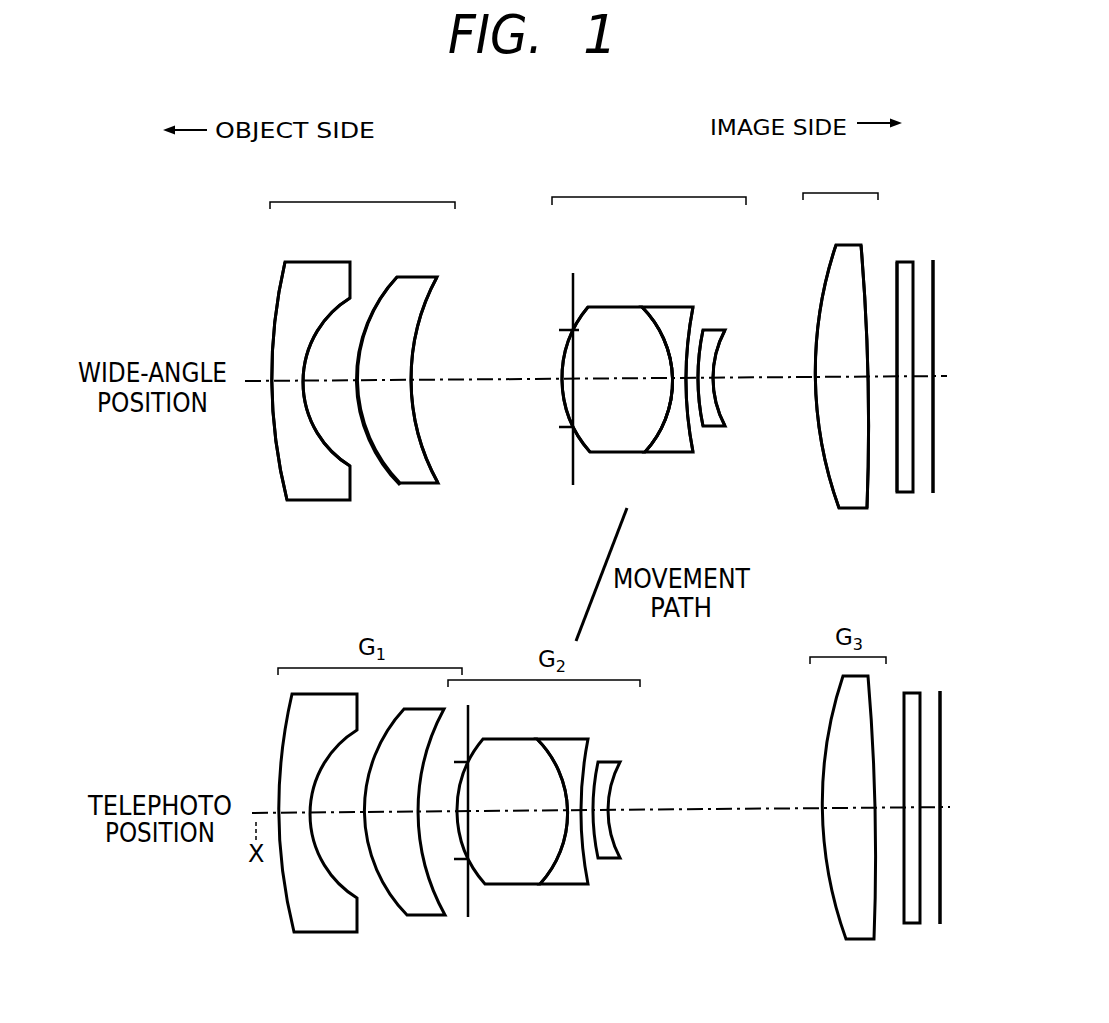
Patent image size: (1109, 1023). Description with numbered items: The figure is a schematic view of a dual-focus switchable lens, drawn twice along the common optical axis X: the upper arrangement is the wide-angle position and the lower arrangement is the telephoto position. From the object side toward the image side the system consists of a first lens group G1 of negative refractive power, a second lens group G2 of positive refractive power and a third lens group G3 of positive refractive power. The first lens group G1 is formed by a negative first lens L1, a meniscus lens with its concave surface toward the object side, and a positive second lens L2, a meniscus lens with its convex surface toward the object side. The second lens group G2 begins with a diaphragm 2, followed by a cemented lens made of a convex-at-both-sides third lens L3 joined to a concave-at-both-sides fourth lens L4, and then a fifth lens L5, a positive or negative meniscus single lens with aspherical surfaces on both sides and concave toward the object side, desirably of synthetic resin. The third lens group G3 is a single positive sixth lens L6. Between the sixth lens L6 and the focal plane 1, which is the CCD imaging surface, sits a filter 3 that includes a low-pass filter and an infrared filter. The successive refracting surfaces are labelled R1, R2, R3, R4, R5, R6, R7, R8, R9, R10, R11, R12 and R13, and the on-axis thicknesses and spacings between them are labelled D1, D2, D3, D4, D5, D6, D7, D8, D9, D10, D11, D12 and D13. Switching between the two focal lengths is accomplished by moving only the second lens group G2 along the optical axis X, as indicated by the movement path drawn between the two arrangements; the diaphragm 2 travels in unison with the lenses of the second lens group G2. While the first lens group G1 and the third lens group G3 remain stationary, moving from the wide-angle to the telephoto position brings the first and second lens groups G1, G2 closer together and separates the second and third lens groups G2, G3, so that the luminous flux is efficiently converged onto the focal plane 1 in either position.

The focal plane 1 is at (933, 480).
The diaphragm 2 is at (573, 444).
The filter 3 is at (897, 477).
The first lens group G1 is at (362, 187).
The second lens group G2 is at (649, 184).
The third lens group G3 is at (840, 182).
The first lens L1 is at (333, 494).
The second lens L2 is at (422, 478).
The third lens L3 is at (608, 446).
The fourth lens L4 is at (677, 446).
The fifth lens L5 is at (717, 429).
The sixth lens L6 is at (827, 470).
The first lens surface R1 is at (273, 370).
The second lens surface R2 is at (310, 362).
The third lens surface R3 is at (355, 355).
The fourth lens surface R4 is at (417, 332).
The fifth lens surface R5 is at (572, 308).
The sixth lens surface R6 is at (572, 342).
The seventh lens surface R7 is at (647, 333).
The eighth lens surface R8 is at (693, 333).
The ninth lens surface R9 is at (699, 347).
The tenth lens surface R10 is at (722, 344).
The eleventh lens surface R11 is at (822, 293).
The twelfth lens surface R12 is at (868, 288).
The thirteenth lens surface R13 is at (897, 333).
The first axial distance D1 is at (297, 387).
The second axial distance D2 is at (345, 390).
The third axial distance D3 is at (400, 390).
The fourth axial distance D4 is at (490, 390).
The fifth axial distance D5 is at (566, 389).
The sixth axial distance D6 is at (602, 390).
The seventh axial distance D7 is at (667, 388).
The eighth axial distance D8 is at (728, 396).
The ninth axial distance D9 is at (728, 391).
The tenth axial distance D10 is at (795, 374).
The eleventh axial distance D11 is at (845, 387).
The twelfth axial distance D12 is at (879, 373).
The thirteenth axial distance D13 is at (940, 388).
The optical axis X is at (250, 390).